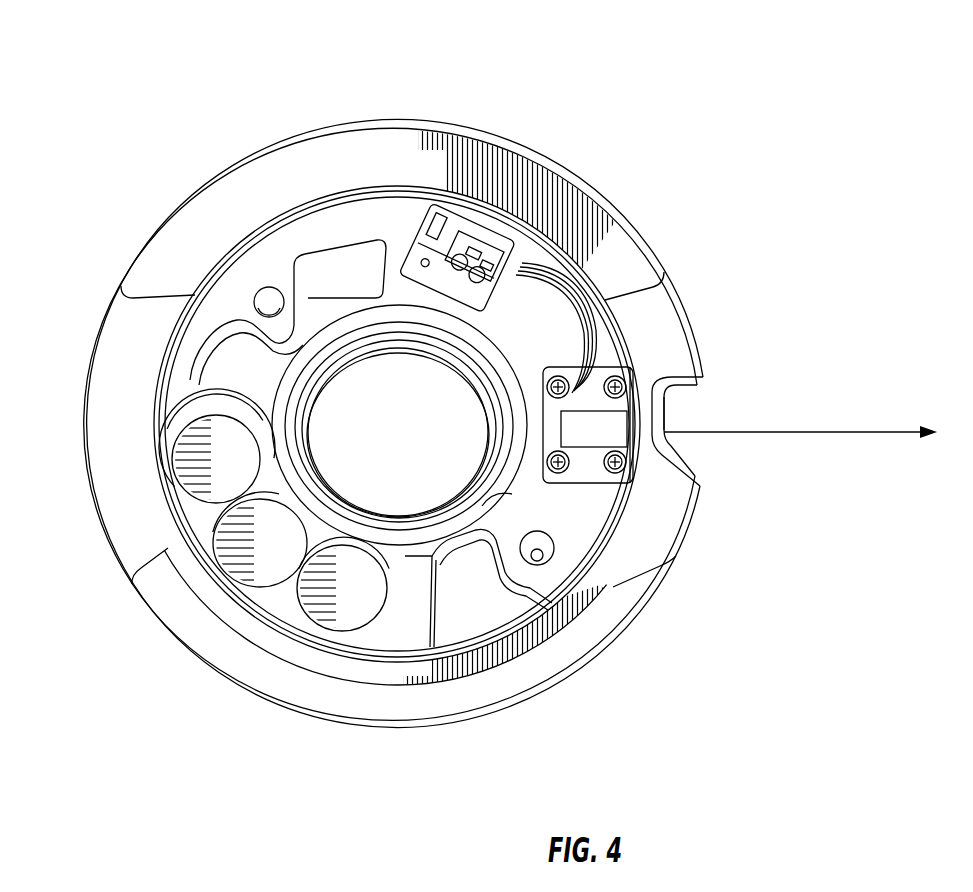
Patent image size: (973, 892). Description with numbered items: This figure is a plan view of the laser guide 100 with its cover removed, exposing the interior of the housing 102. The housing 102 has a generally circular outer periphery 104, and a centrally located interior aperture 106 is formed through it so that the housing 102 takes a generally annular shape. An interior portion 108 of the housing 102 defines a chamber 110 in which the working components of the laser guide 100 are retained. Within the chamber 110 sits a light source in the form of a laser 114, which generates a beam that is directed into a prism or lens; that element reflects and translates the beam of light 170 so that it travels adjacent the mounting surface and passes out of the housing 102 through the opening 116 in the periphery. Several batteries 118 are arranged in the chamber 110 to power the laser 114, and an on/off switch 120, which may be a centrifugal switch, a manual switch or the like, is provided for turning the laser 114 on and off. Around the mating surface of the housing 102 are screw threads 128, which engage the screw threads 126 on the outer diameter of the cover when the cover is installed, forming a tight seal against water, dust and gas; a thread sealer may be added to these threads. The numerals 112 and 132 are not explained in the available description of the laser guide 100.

The laser guide 100 is at (563, 58).
The housing 102 is at (398, 145).
The outer periphery 104 is at (274, 714).
The interior aperture 106 is at (404, 368).
The interior portion 108 is at (234, 600).
The chamber 110 is at (273, 603).
The mounting pad 112 is at (395, 712).
The laser 114 is at (583, 486).
The opening 116 is at (692, 463).
The batteries 118 is at (252, 474).
The on/off switch 120 is at (420, 254).
The screw threads 126 is at (498, 498).
The screw threads 128 is at (357, 352).
The cable pocket 132 is at (456, 514).
The beam of light 170 is at (830, 430).